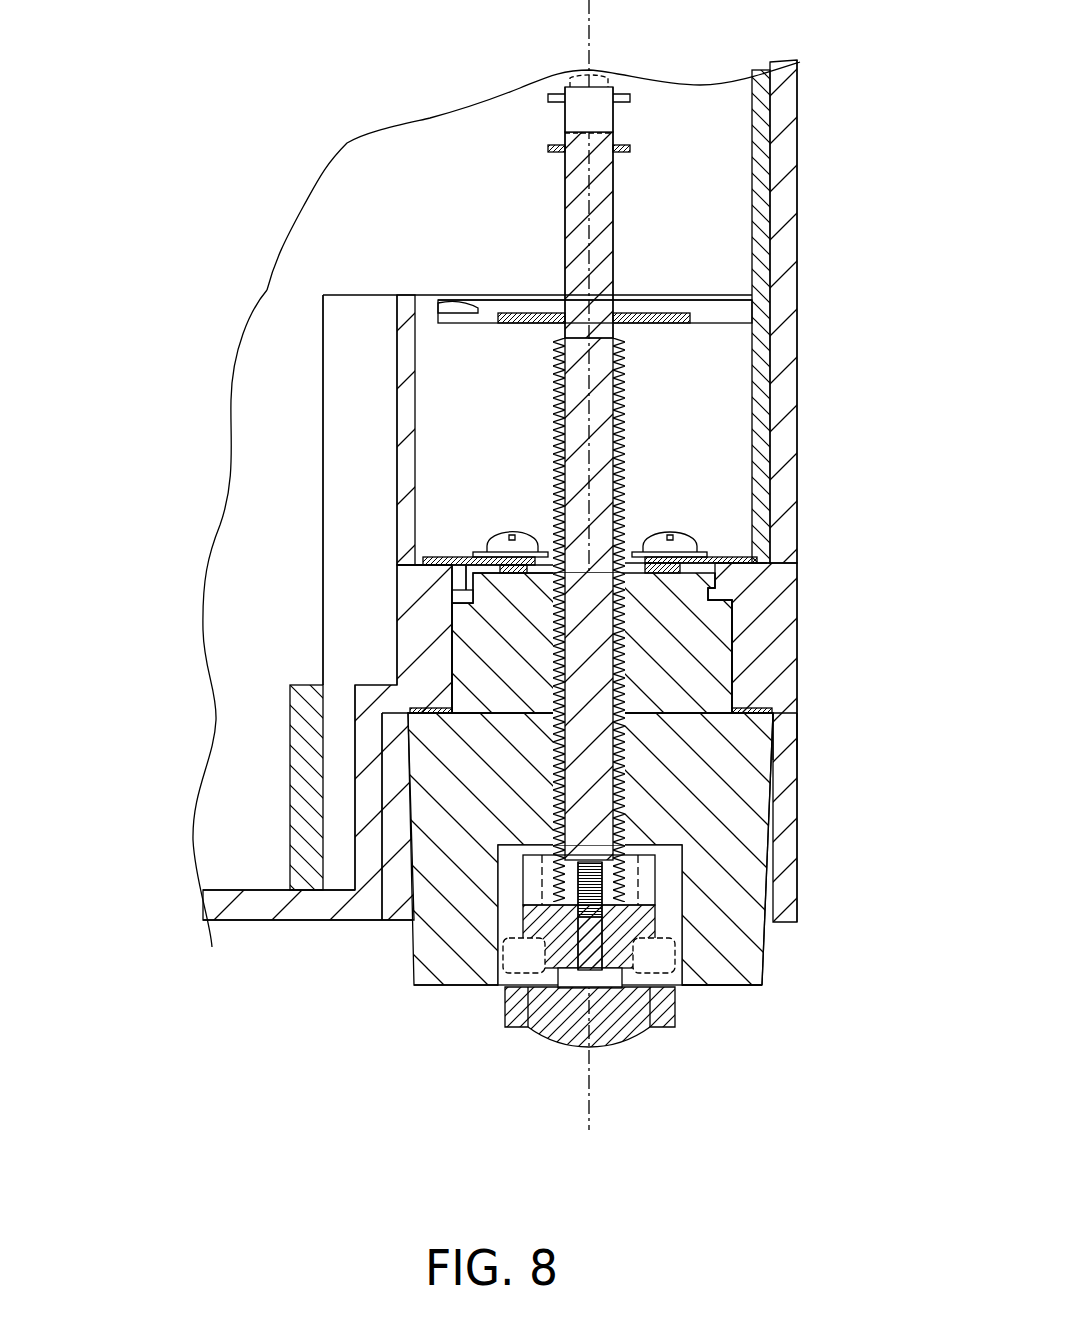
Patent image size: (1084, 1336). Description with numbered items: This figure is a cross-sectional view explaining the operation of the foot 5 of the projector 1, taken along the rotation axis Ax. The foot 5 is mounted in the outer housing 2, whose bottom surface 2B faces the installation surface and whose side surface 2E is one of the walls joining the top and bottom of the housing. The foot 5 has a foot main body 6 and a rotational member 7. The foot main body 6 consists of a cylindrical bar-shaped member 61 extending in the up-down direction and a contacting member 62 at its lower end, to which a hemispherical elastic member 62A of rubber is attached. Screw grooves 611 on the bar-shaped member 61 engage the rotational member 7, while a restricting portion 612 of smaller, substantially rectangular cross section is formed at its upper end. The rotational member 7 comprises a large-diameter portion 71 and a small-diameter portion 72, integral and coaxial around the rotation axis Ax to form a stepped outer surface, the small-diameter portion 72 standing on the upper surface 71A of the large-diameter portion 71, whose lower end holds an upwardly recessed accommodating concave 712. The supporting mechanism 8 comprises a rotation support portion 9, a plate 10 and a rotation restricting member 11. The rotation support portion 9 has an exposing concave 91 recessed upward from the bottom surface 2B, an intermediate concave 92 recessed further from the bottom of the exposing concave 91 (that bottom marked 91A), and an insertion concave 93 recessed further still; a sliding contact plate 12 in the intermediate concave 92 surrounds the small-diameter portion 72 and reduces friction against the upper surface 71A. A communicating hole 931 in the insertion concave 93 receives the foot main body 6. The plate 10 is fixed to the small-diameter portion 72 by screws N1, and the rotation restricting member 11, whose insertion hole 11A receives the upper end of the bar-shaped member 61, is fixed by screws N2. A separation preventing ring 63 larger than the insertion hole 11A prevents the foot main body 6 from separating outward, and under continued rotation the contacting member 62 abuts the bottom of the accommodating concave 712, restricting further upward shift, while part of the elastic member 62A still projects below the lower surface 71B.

The projector 1 is at (278, 152).
The rotation axis Ax is at (598, 14).
The outer housing 2 is at (797, 205).
The side surface 2E is at (797, 140).
The bottom surface 2B is at (240, 915).
The foot 5 is at (904, 815).
The foot main body 6 is at (874, 790).
The bar-shaped member 61 is at (605, 790).
The screw grooves 611 is at (625, 418).
The restricting portion 612 is at (613, 205).
The contacting member 62 is at (657, 1005).
The elastic member 62A is at (640, 1045).
The separation preventing ring 63 is at (632, 148).
The rotational member 7 is at (752, 960).
The large-diameter portion 71 is at (433, 878).
The upper surface 71A is at (743, 707).
The lower surface 71B is at (734, 987).
The accommodating concave 712 is at (520, 862).
The small-diameter portion 72 is at (720, 655).
The supporting mechanism 8 is at (103, 495).
The rotation support portion 9 is at (141, 653).
The exposing concave 91 is at (385, 745).
The contact face of fixing portion 91A is at (775, 728).
The intermediate concave 92 is at (430, 716).
The insertion concave 93 is at (450, 650).
The communicating hole 931 is at (473, 557).
The plate 10 is at (433, 557).
The rotation restricting member 11 is at (518, 323).
The insertion hole 11A is at (610, 303).
The sliding contact plate 12 is at (797, 728).
The screws N1 is at (668, 535).
The screws N2 is at (511, 535).